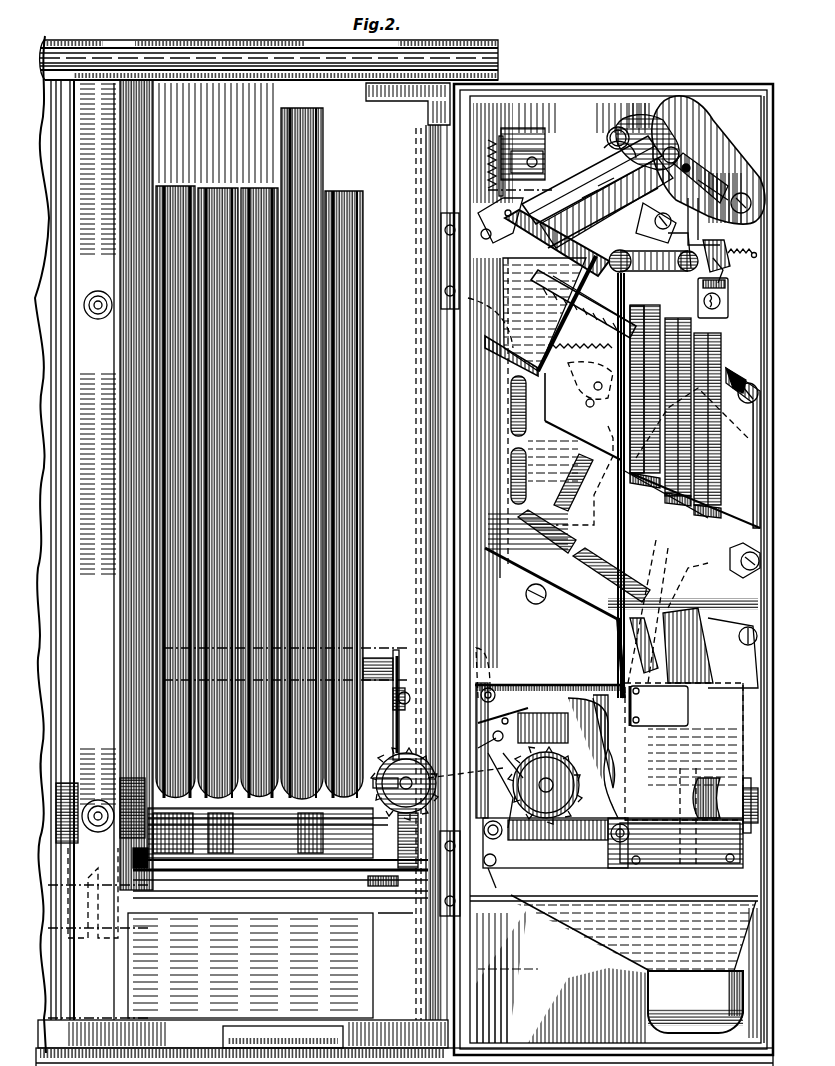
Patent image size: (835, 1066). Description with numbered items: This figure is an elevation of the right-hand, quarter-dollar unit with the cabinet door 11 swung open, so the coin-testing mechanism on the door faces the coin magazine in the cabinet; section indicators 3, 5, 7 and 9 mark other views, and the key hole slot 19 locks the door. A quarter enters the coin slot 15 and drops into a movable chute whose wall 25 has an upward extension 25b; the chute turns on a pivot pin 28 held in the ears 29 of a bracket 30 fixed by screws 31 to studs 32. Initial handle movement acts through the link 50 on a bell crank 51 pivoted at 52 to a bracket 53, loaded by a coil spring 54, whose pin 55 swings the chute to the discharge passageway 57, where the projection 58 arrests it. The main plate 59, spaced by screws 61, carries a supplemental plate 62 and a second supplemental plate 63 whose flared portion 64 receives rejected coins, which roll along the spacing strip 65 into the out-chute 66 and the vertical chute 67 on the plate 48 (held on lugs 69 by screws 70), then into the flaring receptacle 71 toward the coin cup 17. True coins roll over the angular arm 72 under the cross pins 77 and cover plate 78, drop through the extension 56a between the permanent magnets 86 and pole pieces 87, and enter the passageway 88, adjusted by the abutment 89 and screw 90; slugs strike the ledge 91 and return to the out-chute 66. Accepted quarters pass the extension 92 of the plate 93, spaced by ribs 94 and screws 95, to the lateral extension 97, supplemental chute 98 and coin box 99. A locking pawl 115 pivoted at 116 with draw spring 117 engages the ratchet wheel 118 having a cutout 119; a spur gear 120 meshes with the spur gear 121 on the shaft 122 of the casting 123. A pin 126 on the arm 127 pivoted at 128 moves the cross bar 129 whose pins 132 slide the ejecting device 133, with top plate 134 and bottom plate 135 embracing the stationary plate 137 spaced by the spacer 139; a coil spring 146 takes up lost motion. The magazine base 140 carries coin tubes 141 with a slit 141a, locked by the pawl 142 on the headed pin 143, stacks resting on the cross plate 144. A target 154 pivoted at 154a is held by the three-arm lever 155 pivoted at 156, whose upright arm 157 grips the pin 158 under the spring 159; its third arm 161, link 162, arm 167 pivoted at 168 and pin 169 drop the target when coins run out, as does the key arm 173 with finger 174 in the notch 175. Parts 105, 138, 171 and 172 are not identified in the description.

The section line 3 is at (500, 62).
The section line 5 is at (505, 113).
The section line 7 is at (676, 116).
The section line 9 is at (83, 612).
The key hole slot 19 is at (735, 672).
The door 11 is at (760, 470).
The coin slot 15 is at (592, 155).
The coin cup 17 is at (650, 998).
The chute wall 25 is at (597, 192).
The upward extension 25b is at (585, 178).
The pivot pin 28 is at (615, 143).
The ears 29 is at (649, 223).
The bracket 30 is at (630, 105).
The screws 31 is at (608, 118).
The studs 32 is at (605, 124).
The plate 48 is at (580, 672).
The link 50 is at (490, 590).
The bell crank 51 is at (490, 176).
The pivot 52 is at (510, 155).
The bracket 53 is at (505, 140).
The coil spring 54 is at (482, 146).
The pin 55 is at (522, 226).
The passageway extension 56a is at (710, 460).
The discharge passageway 57 is at (500, 300).
The upward projection 58 is at (482, 205).
The main plate 59 is at (740, 355).
The screws 61 is at (520, 592).
The supplemental plate 62 is at (593, 372).
The second supplemental plate 63 is at (490, 450).
The flared portion 64 is at (480, 338).
The spacing strip 65 is at (598, 418).
The out-chute 66 is at (620, 630).
The vertical chute 67 is at (700, 800).
The lugs 69 is at (472, 680).
The screws 70 is at (485, 768).
The flaring receptacle 71 is at (597, 925).
The angular arm 72 is at (505, 318).
The cross pins 77 is at (580, 341).
The cover plate 78 is at (580, 310).
The permanent magnets 86 is at (705, 420).
The pole pieces 87 is at (660, 495).
The passageway 88 is at (720, 580).
The abutment 89 is at (730, 540).
The screw 90 is at (752, 553).
The ledge 91 is at (700, 560).
The extension 92 is at (715, 660).
The plate 93 is at (720, 720).
The ribs 94 is at (672, 828).
The screws 95 is at (628, 856).
The lateral extension 97 is at (752, 795).
The supplemental chute 98 is at (125, 918).
The coin box 99 is at (360, 957).
The pawl 105 is at (570, 700).
The locking pawl 115 is at (495, 712).
The pivot 116 is at (480, 740).
The draw spring 117 is at (500, 690).
The ratchet wheel 118 is at (545, 740).
The cutout 119 is at (495, 770).
The spur gear 120 is at (545, 785).
The spur gear 121 is at (400, 748).
The shaft 122 is at (465, 780).
The casting 123 is at (392, 680).
The pin 126 is at (370, 770).
The arm 127 is at (392, 720).
The pivot 128 is at (400, 690).
The cross bar 129 is at (258, 850).
The pins 132 is at (240, 833).
The ejecting device 133 is at (345, 892).
The top plate 134 is at (275, 875).
The bottom plate 135 is at (200, 858).
The stationary plate 137 is at (320, 885).
The bar 138 is at (378, 905).
The spacer 139 is at (140, 860).
The base 140 is at (110, 805).
The coin tubes 141 is at (352, 458).
The slit 141a is at (298, 152).
The pawl 142 is at (391, 648).
The headed pin 143 is at (368, 650).
The cross plate 144 is at (250, 866).
The coil spring 146 is at (414, 840).
The target 154 is at (672, 92).
The pivot 154a is at (745, 195).
The three-arm lever 155 is at (675, 232).
The pivot 156 is at (705, 242).
The upright arm 157 is at (715, 229).
The pin 158 is at (682, 162).
The spring 159 is at (748, 247).
The third arm 161 is at (655, 262).
The link 162 is at (612, 648).
The arm 167 is at (560, 832).
The pivot 168 is at (488, 855).
The pin 169 is at (608, 835).
The lever 171 is at (720, 185).
The finger 172 is at (690, 170).
The arm 173 is at (720, 300).
The finger 174 is at (718, 278).
The notch 175 is at (715, 262).